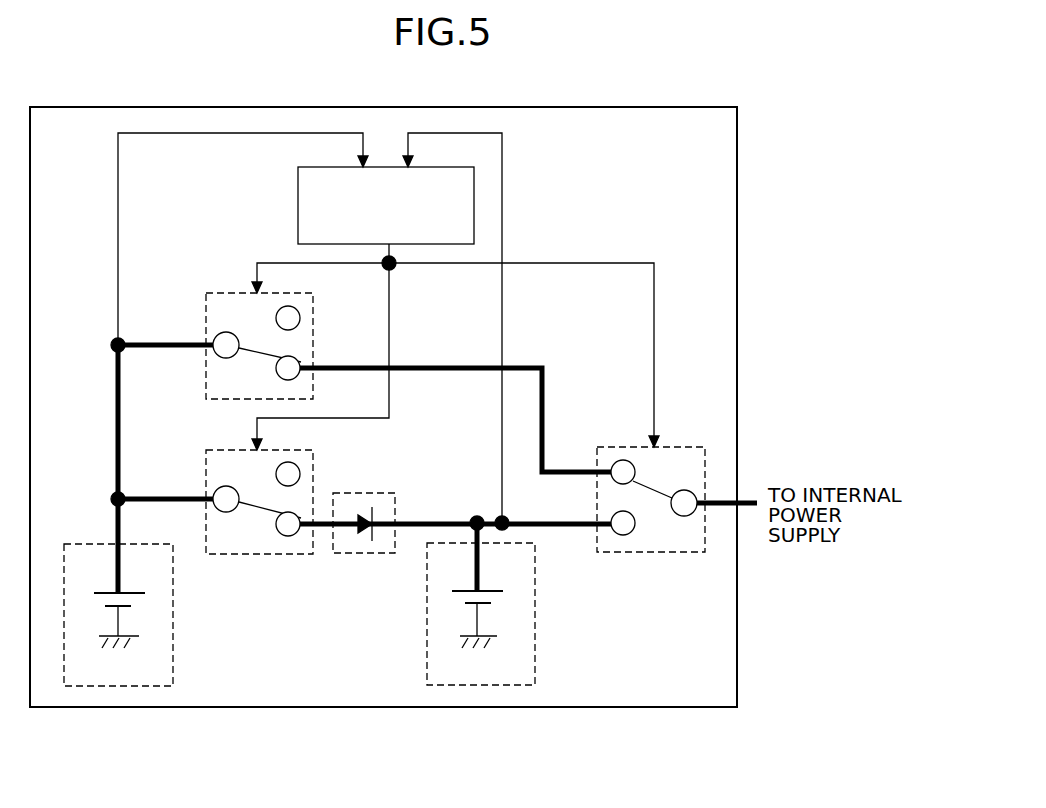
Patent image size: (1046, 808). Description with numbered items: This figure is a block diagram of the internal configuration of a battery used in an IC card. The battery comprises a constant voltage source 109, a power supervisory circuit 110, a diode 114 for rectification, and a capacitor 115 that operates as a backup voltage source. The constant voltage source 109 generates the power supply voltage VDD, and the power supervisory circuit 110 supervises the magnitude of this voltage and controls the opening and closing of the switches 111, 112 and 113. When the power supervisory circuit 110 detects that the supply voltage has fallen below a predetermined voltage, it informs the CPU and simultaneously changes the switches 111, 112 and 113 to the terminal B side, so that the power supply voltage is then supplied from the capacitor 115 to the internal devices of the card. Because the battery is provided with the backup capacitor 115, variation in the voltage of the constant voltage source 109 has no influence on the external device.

The constant voltage source 109 is at (175, 651).
The power supervisory circuit 110 is at (433, 167).
The switch 111 is at (313, 340).
The switch 112 is at (313, 476).
The switch 113 is at (678, 444).
The diode 114 is at (402, 500).
The capacitor 115 is at (537, 628).